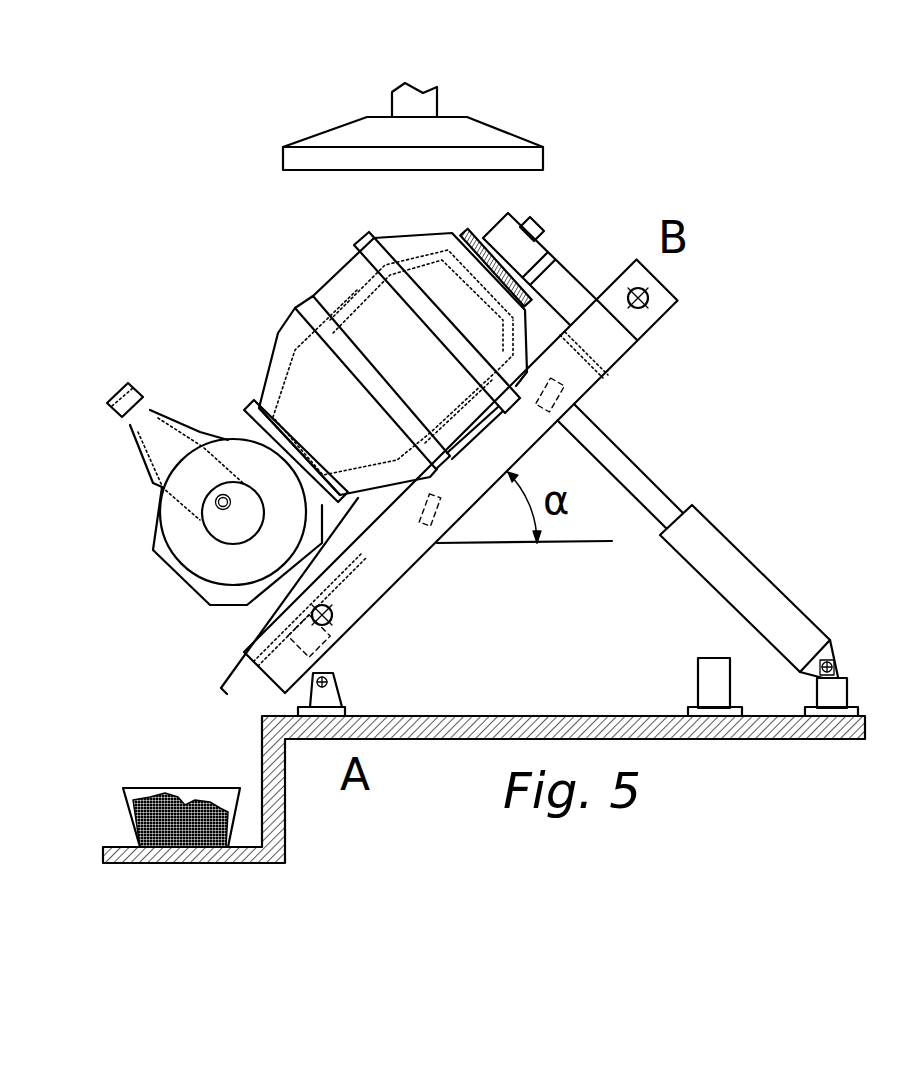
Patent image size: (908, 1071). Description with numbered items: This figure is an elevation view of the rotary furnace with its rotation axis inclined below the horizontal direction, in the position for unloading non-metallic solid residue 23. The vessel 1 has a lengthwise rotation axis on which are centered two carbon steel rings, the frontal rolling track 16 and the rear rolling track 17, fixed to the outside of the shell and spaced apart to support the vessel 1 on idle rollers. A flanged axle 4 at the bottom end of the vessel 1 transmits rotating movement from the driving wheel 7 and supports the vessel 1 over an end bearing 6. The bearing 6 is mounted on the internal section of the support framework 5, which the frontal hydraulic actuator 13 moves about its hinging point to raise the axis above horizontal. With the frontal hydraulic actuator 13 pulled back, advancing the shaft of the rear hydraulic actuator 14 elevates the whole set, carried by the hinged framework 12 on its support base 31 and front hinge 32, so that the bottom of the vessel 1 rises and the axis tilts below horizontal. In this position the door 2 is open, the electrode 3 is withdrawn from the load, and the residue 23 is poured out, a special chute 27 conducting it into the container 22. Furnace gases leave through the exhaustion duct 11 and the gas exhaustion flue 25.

The vessel 1 is at (283, 367).
The door 2 is at (231, 438).
The electrode 3 is at (217, 502).
The flanged axle 4 is at (536, 226).
The support framework 5 is at (620, 347).
The bearing 6 is at (484, 238).
The driving wheel 7 is at (464, 233).
The exhaustion duct 11 is at (110, 402).
The hinged framework 12 is at (198, 597).
The frontal hydraulic actuator 13 is at (343, 648).
The rear hydraulic actuator 14 is at (752, 588).
The steel ring, frontal rolling track 16 is at (302, 300).
The steel ring, rear rolling track 17 is at (353, 241).
The container 22 is at (190, 788).
The residue 23 is at (152, 829).
The gas exhaustion flue 25 is at (503, 130).
The chute 27 is at (237, 668).
The support base of the hinged structure 31 is at (710, 672).
The front hinge 32 is at (328, 703).